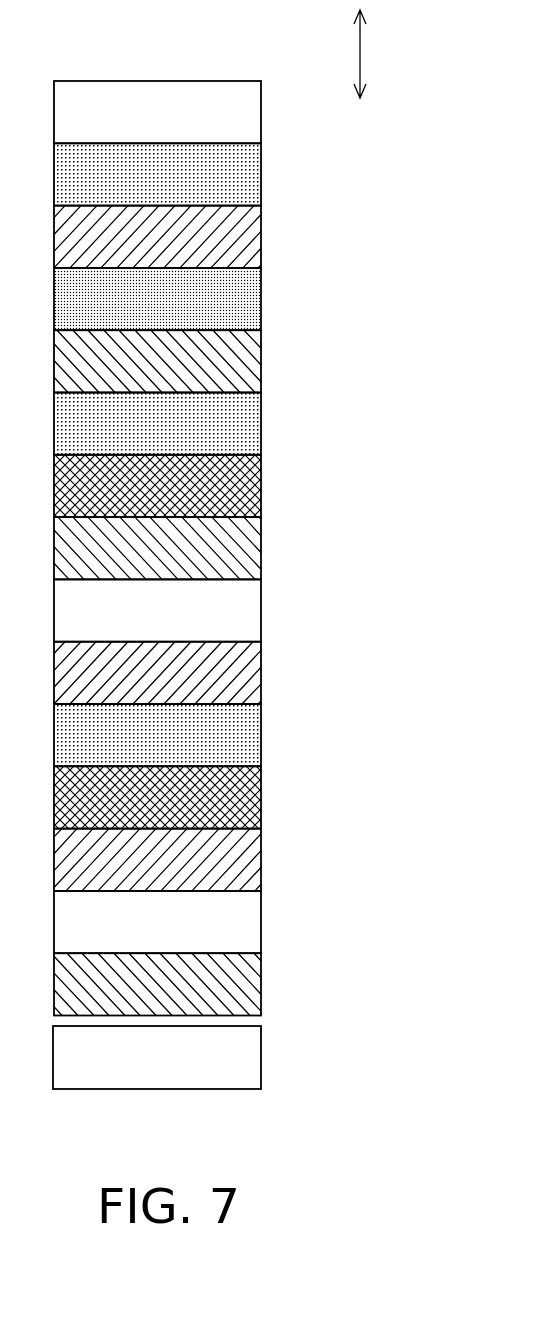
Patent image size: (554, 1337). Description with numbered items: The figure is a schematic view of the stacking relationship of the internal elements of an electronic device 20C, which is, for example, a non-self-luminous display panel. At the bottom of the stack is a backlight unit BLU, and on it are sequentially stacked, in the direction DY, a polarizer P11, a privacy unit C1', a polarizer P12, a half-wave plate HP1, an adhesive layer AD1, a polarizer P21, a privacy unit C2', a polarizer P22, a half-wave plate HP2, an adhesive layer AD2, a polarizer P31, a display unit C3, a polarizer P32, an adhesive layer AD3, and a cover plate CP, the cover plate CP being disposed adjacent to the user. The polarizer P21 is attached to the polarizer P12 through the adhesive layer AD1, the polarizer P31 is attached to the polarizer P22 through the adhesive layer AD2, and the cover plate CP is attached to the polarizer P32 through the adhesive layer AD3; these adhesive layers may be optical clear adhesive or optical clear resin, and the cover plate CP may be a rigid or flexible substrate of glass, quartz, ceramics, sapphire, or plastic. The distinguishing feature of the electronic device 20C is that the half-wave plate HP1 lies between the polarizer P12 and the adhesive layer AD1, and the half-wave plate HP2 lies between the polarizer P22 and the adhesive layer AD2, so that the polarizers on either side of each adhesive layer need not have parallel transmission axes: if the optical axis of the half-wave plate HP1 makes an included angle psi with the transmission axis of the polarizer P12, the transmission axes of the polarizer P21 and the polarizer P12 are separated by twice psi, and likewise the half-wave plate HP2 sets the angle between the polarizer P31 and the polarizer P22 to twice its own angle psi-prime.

The cover plate CP is at (252, 114).
The adhesive layer AD3 is at (252, 176).
The polarizer P32 is at (252, 239).
The display unit C3 is at (252, 301).
The polarizer P31 is at (252, 363).
The adhesive layer AD2 is at (252, 426).
The half-wave plate HP2 is at (252, 488).
The polarizer P22 is at (252, 550).
The privacy unit C2' is at (184, 610).
The polarizer P21 is at (252, 675).
The adhesive layer AD1 is at (252, 737).
The half-wave plate HP1 is at (252, 800).
The polarizer P12 is at (252, 862).
The privacy unit C1' is at (184, 922).
The polarizer P11 is at (252, 986).
The backlight unit BLU is at (252, 1058).
The electronic device 20C is at (198, 616).
The direction DY is at (357, 44).